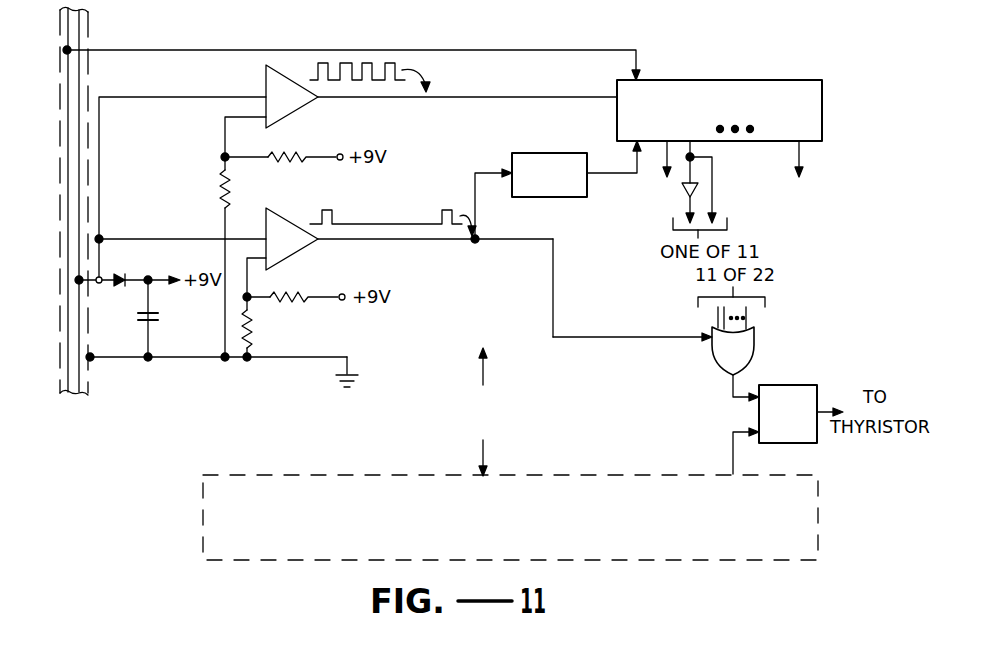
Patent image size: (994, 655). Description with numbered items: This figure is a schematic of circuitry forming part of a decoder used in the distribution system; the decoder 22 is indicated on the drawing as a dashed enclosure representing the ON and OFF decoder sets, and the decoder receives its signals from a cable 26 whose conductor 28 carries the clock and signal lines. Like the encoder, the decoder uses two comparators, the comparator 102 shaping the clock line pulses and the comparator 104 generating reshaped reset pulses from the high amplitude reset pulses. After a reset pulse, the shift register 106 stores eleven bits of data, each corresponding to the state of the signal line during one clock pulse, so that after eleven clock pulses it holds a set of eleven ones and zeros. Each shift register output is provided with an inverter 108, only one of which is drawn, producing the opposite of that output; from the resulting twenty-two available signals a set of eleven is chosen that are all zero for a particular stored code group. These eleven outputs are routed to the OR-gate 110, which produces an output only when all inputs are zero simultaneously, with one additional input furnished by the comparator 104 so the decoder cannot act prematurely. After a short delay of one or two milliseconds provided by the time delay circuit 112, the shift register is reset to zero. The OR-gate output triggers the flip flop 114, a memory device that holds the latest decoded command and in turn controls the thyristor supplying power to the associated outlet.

The decoder 22 is at (156, 463).
The bus cable 26 is at (52, 193).
The bus line 28 is at (66, 118).
The comparator 102 is at (300, 116).
The comparator 104 is at (302, 245).
The shift register 106 is at (757, 80).
The inverter 108 is at (683, 193).
The OR-gate 110 is at (727, 352).
The time delay circuit 112 is at (548, 132).
The flip flop 114 is at (800, 385).